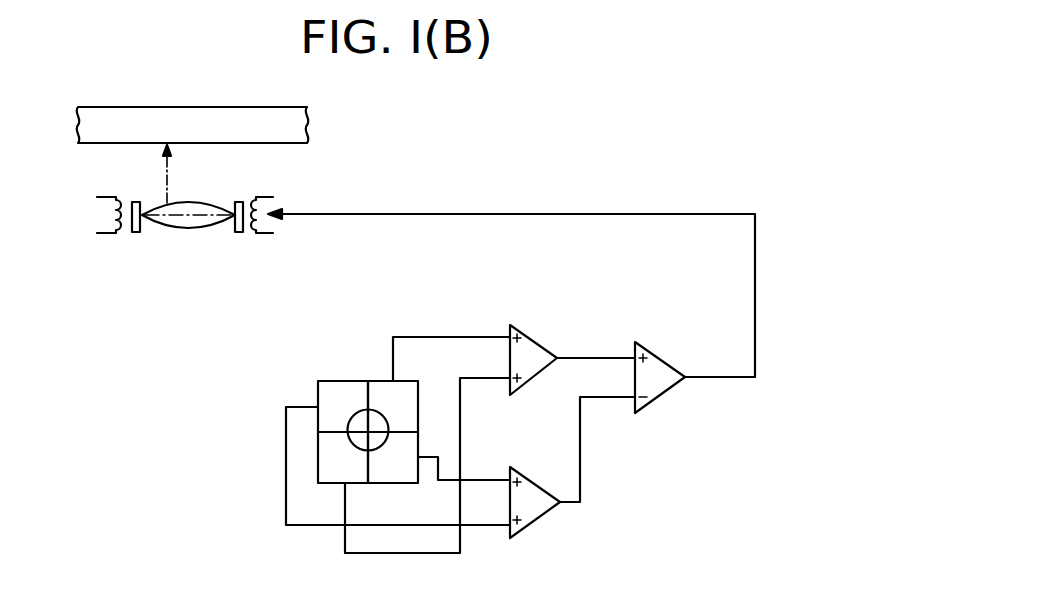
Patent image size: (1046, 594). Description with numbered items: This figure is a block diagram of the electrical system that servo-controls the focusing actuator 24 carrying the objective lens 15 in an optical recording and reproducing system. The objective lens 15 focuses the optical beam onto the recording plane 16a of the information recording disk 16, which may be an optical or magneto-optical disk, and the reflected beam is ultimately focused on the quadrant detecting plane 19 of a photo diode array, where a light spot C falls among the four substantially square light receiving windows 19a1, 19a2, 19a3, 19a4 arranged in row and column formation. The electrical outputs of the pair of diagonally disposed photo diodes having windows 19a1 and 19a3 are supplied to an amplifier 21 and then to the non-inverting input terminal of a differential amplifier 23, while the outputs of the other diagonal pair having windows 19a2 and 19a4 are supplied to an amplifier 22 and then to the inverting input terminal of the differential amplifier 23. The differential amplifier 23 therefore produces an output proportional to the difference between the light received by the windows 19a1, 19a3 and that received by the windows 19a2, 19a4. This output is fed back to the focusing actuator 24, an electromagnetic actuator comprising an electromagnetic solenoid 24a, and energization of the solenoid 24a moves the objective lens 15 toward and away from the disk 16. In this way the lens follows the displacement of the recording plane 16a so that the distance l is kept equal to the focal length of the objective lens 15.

The objective lens 15 is at (208, 223).
The information recording disk 16 is at (190, 107).
The recording plane 16a is at (122, 143).
The quadrant detecting plane 19 is at (339, 410).
The light receiving window 19a1 is at (402, 392).
The light receiving window 19a2 is at (410, 488).
The light receiving window 19a3 is at (330, 458).
The light receiving window 19a4 is at (330, 403).
The amplifier 21 is at (538, 342).
The amplifier 22 is at (538, 517).
The differential amplifier 23 is at (668, 393).
The focusing actuator 24 is at (107, 240).
The electromagnetic solenoid 24a is at (267, 190).
The light spot C is at (382, 425).
The distance l is at (158, 174).